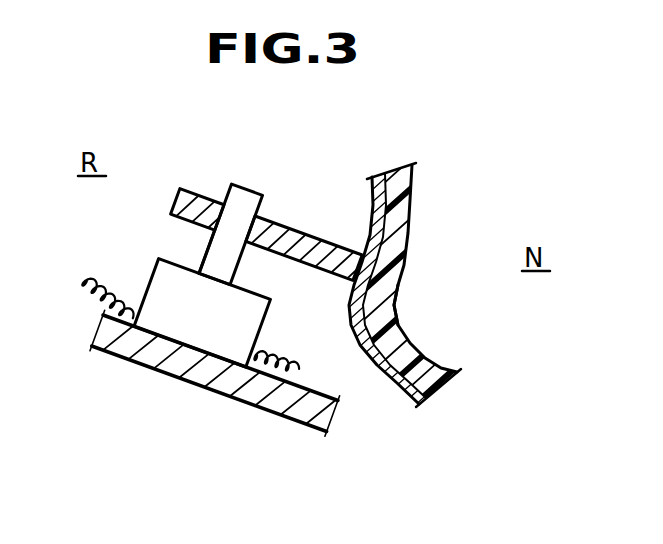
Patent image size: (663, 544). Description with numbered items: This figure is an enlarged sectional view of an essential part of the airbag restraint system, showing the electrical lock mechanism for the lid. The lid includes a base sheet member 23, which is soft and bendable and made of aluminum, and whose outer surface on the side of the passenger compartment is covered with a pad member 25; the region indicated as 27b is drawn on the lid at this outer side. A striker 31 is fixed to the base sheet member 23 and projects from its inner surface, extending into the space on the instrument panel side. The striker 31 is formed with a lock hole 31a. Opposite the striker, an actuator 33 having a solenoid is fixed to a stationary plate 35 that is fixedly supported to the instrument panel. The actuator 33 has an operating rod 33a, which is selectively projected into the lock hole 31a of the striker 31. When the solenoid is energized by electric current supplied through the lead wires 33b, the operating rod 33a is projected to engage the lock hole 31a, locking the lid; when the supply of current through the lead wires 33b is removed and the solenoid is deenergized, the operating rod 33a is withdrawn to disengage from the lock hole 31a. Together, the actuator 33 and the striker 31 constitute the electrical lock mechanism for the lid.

The base sheet member 23 is at (375, 211).
The pad member 25 is at (402, 215).
The curved surface portion 27b is at (395, 303).
The striker 31 is at (283, 232).
The lock hole 31a is at (225, 200).
The actuator 33 is at (200, 337).
The operating rod 33a is at (217, 252).
The lead wires 33b is at (87, 280).
The stationary plate 35 is at (305, 421).